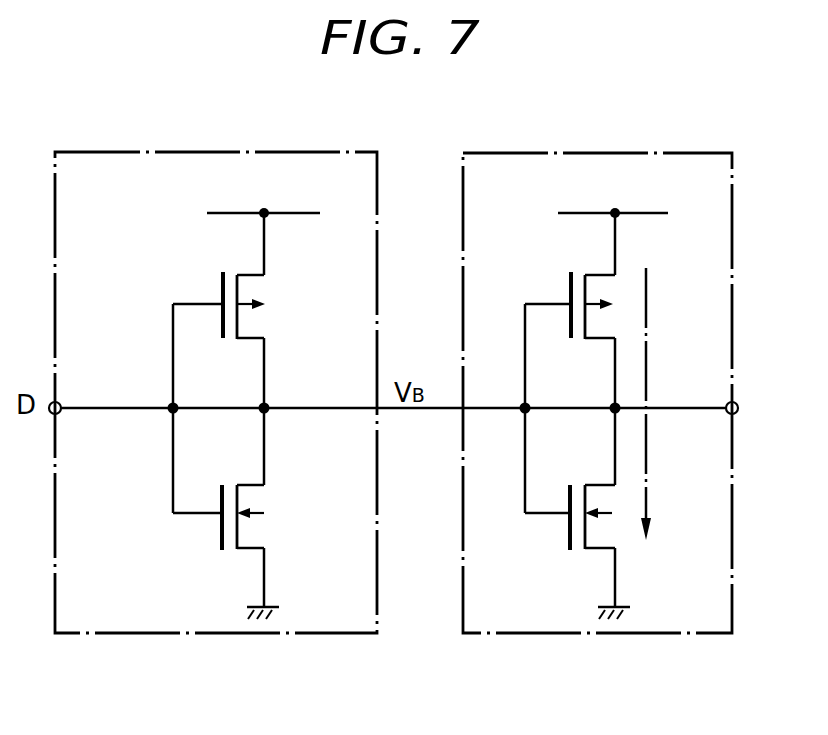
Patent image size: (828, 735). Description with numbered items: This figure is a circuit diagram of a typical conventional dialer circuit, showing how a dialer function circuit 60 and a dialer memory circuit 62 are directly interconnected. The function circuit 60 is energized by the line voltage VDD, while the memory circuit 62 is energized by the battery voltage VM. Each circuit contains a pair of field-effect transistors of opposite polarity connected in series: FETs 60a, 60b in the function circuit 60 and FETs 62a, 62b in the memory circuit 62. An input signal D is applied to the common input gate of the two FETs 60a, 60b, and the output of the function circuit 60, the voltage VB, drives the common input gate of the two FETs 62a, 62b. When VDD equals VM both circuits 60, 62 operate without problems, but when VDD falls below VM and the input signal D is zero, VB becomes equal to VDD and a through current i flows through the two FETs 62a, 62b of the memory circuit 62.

The dialer function circuit 60 is at (228, 152).
The FET of dialer function circuit 60a is at (222, 283).
The FET of dialer function circuit 60b is at (222, 532).
The dialer memory circuit 62 is at (620, 152).
The FET of memory circuit 62a is at (571, 288).
The FET of memory circuit 62b is at (570, 538).